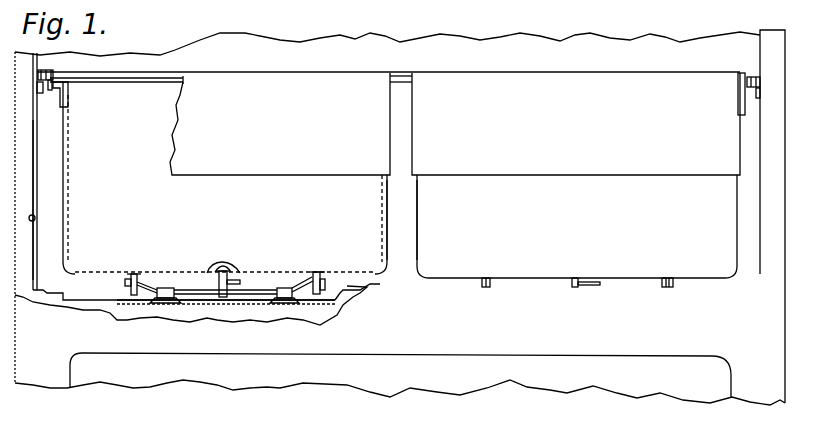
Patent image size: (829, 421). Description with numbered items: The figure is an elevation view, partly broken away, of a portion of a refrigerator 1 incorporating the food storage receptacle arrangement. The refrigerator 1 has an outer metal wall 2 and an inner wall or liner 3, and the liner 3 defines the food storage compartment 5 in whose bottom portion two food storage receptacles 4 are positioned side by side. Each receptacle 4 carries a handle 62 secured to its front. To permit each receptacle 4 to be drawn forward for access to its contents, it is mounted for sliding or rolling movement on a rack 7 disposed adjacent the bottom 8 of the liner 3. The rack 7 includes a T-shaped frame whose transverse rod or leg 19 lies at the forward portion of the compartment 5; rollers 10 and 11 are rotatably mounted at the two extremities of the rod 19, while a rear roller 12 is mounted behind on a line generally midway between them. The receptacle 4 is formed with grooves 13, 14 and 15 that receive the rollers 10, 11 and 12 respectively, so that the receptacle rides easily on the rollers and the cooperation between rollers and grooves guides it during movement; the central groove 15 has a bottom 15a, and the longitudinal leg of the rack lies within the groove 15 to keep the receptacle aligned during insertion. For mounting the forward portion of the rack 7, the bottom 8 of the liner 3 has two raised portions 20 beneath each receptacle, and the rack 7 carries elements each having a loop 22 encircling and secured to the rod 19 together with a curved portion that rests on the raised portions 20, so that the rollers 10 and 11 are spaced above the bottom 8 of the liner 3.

The refrigerator 1 is at (224, 50).
The outer metal wall 2 is at (20, 198).
The inner wall or liner 3 is at (35, 218).
The food storage receptacle 4 is at (430, 220).
The food storage compartment 5 is at (50, 132).
The rack 7 is at (164, 267).
The bottom of the liner 8 is at (226, 326).
The roller 10 is at (502, 263).
The roller 11 is at (326, 280).
The roller 12 is at (582, 263).
The groove 13 is at (115, 260).
The groove 14 is at (315, 252).
The central groove 15 is at (213, 252).
The bottom of the groove 15a is at (224, 268).
The transverse rod or leg 19 is at (263, 288).
The raised portion 20 is at (234, 325).
The loop 22 is at (223, 294).
The handle 62 is at (268, 82).